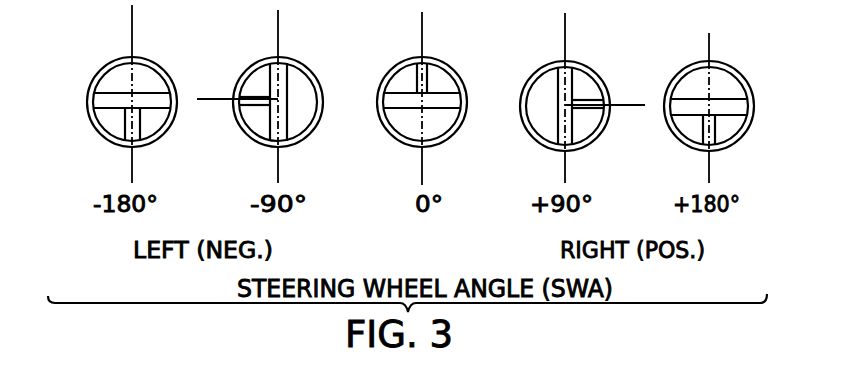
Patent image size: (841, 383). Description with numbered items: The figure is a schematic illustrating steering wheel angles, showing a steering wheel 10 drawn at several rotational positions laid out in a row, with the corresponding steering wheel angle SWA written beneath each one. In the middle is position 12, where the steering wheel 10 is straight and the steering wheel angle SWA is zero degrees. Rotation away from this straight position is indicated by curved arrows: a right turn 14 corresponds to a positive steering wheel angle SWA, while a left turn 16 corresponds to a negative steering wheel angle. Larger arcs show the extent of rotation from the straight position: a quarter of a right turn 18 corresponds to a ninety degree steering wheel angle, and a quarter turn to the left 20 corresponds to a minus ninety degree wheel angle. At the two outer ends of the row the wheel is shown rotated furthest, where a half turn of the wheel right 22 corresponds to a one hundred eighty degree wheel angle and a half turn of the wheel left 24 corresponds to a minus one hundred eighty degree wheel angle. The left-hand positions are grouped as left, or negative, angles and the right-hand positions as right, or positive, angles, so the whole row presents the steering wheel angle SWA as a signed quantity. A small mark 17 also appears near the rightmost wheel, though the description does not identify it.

The steering wheel 10 is at (237, 115).
The position 12 is at (452, 56).
The right turn 14 is at (618, 79).
The left turn 16 is at (122, 43).
The rotation indicator 17 is at (761, 27).
The quarter of a right turn 18 is at (638, 97).
The quarter turn to the left 20 is at (278, 27).
The half turn of the wheel right 22 is at (730, 142).
The half turn of the wheel left 24 is at (101, 138).